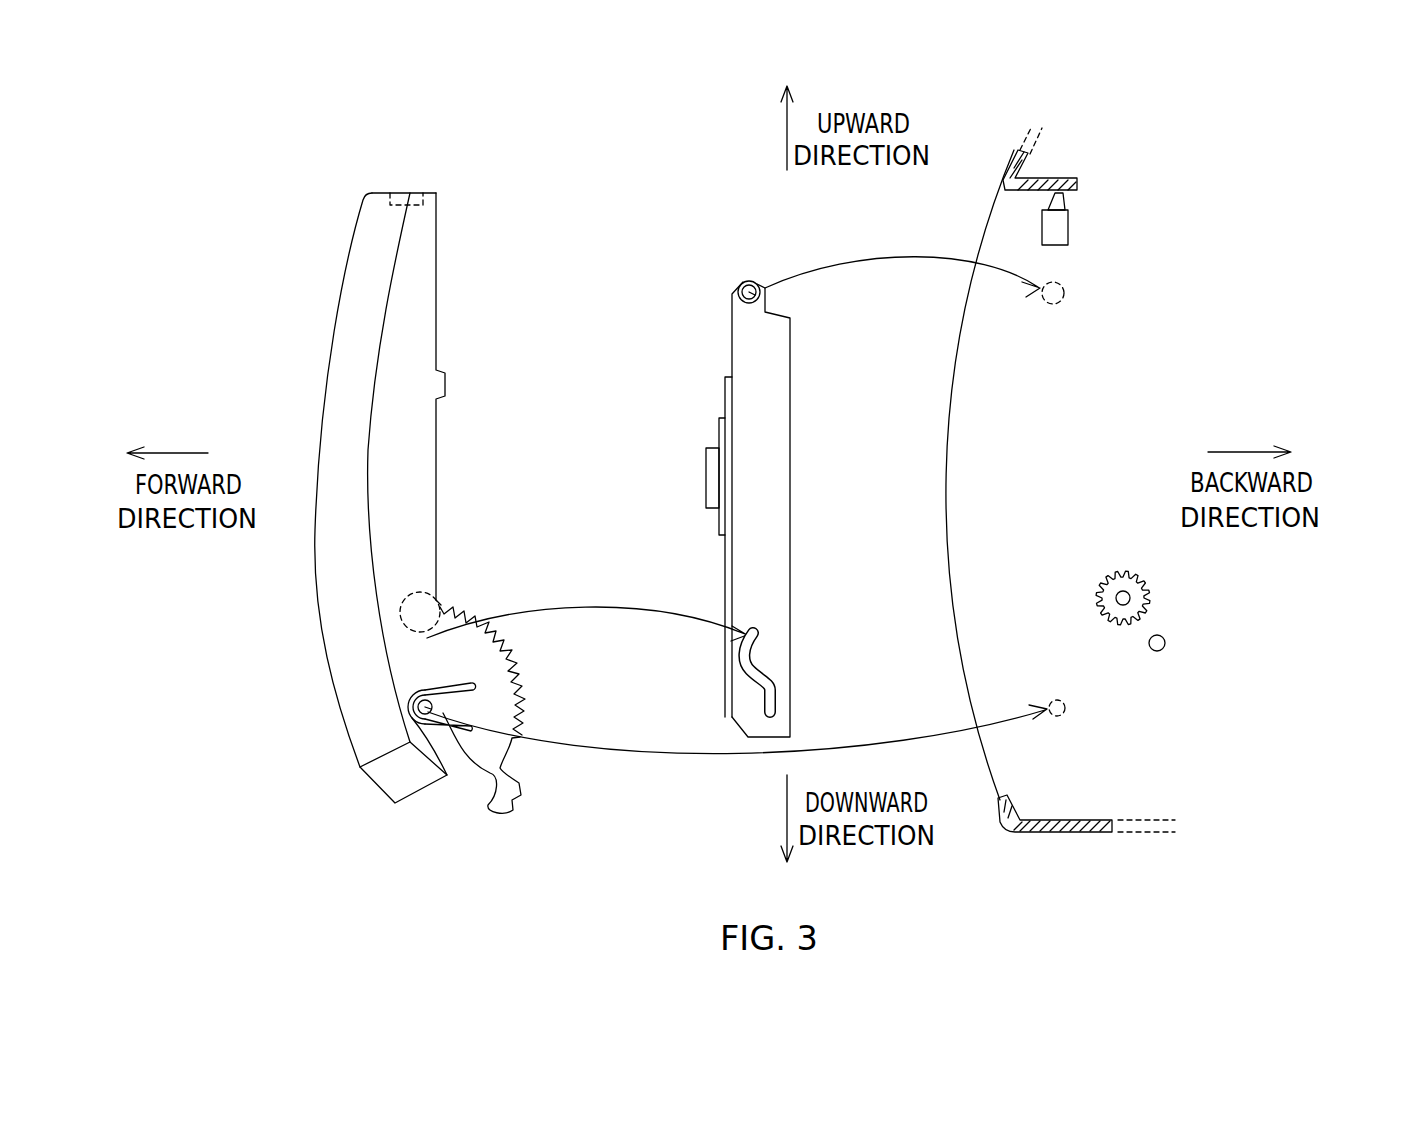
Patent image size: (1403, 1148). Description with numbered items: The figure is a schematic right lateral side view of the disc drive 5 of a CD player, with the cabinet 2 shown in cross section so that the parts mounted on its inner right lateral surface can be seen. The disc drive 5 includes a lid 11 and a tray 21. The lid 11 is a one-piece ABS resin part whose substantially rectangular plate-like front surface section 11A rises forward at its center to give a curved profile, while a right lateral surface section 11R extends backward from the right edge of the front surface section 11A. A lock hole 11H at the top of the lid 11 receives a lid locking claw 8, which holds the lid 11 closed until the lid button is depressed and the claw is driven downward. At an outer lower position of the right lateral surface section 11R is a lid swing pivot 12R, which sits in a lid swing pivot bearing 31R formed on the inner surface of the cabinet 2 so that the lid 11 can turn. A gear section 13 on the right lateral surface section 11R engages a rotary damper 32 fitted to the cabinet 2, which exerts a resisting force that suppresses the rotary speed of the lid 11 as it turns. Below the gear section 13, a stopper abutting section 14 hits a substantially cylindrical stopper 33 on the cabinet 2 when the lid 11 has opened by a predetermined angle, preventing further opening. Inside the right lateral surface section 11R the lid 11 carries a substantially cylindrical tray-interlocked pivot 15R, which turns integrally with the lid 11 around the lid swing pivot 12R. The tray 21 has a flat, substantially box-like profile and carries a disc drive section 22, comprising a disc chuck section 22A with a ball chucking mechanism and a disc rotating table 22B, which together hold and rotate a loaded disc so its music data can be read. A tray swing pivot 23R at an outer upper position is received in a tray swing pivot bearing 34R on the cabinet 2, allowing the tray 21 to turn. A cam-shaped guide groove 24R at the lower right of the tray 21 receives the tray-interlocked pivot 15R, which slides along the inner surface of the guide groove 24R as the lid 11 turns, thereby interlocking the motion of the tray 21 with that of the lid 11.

The cabinet 2 is at (1010, 170).
The disc drive 5 is at (1242, 125).
The lid locking claw 8 is at (1064, 200).
The lid 11 is at (400, 469).
The front surface section 11A is at (294, 436).
The lock hole 11H is at (421, 186).
The right lateral surface section 11R is at (428, 331).
The lid swing pivot 12R is at (427, 714).
The gear section 13 is at (539, 670).
The stopper abutting section 14 is at (534, 808).
The tray-interlocked pivot 15R is at (438, 595).
The tray 21 is at (762, 445).
The disc drive section 22 is at (670, 547).
The disc chuck section 22A is at (694, 486).
The disc rotating table 22B is at (706, 531).
The tray swing pivot 23R is at (750, 282).
The guide groove 24R is at (778, 673).
The lid swing pivot bearing 31R is at (1067, 708).
The rotary damper 32 is at (1150, 600).
The stopper 33 is at (1165, 645).
The tray swing pivot bearing 34R is at (1066, 290).